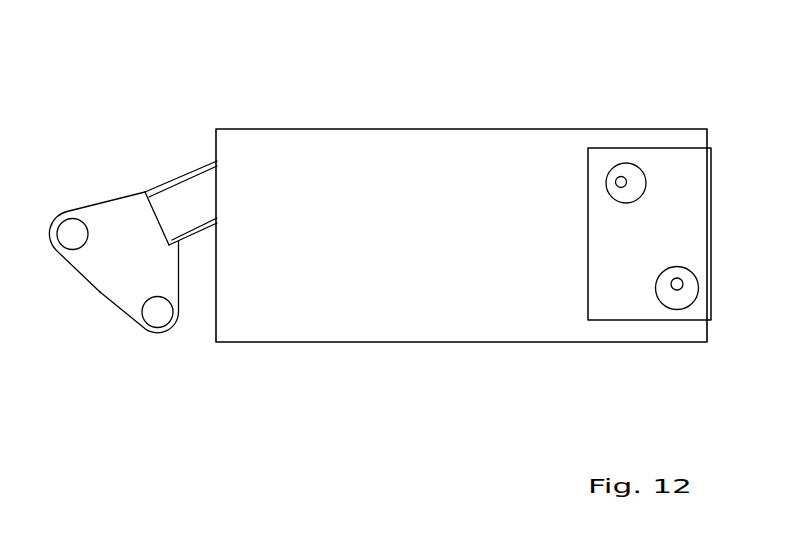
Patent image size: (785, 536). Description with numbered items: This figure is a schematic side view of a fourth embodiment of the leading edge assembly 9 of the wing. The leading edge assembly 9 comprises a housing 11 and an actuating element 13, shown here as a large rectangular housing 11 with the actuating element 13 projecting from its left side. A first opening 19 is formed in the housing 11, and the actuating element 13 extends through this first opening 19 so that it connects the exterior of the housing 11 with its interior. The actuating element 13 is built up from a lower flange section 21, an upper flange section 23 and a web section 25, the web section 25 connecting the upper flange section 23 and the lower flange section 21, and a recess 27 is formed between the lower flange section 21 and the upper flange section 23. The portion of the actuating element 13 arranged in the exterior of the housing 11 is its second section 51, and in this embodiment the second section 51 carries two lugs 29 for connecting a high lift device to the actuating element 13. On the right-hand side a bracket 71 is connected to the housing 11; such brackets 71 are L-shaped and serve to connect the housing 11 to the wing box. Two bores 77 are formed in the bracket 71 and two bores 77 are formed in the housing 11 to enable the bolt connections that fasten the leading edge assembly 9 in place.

The leading edge assembly 9 is at (650, 100).
The housing 11 is at (410, 158).
The actuating element 13 is at (124, 318).
The first opening 19 is at (211, 203).
The lower flange section 21 is at (203, 231).
The upper flange section 23 is at (200, 167).
The web section 25 is at (202, 186).
The recess 27 is at (151, 226).
The lug 29 is at (57, 252).
The second section 51 is at (112, 212).
The bracket 71 is at (654, 227).
The bore 77 is at (621, 177).